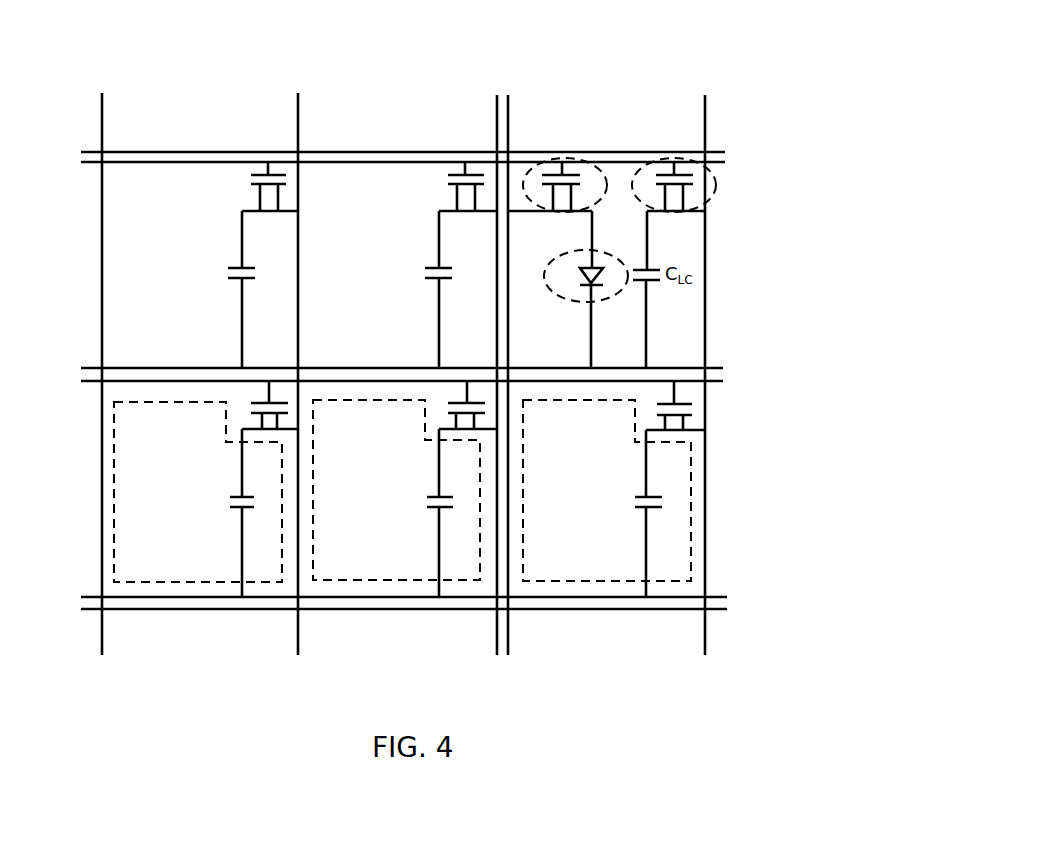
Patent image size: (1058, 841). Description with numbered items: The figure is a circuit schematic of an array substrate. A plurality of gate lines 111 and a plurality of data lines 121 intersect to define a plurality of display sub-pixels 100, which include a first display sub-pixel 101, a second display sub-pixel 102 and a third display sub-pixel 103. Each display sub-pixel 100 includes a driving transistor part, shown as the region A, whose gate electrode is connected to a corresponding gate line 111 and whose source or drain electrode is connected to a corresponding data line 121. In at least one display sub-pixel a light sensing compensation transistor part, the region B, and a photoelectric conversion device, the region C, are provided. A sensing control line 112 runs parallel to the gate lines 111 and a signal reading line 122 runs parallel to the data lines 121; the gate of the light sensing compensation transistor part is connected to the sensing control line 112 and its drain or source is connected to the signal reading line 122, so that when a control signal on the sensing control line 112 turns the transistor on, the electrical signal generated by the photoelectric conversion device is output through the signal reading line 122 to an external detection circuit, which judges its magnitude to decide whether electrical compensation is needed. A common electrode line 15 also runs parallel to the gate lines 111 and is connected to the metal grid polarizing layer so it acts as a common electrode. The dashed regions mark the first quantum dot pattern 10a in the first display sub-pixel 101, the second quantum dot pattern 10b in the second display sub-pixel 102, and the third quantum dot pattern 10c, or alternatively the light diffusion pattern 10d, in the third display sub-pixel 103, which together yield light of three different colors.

The data line 121 is at (102, 93).
The signal reading line 122 is at (508, 95).
The gate line 111 is at (725, 152).
The sensing control line 112 is at (725, 162).
The common electrode line 15 is at (723, 368).
The display sub-pixel 100 is at (409, 538).
The first display sub-pixel 101 is at (206, 538).
The second display sub-pixel 102 is at (405, 538).
The third display sub-pixel 103 is at (614, 538).
The first quantum dot pattern 10a is at (198, 492).
The second quantum dot pattern 10b is at (396, 490).
The third quantum dot pattern 10c is at (607, 490).
The light diffusion pattern 10d is at (607, 490).
The driving transistor part region A is at (689, 154).
The light sensing compensation transistor part region B is at (589, 154).
The photoelectric conversion device region C is at (614, 254).